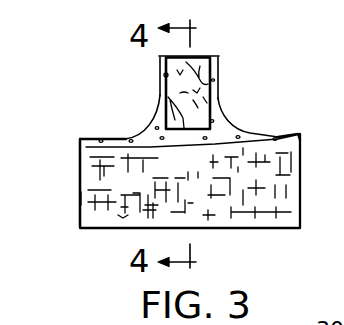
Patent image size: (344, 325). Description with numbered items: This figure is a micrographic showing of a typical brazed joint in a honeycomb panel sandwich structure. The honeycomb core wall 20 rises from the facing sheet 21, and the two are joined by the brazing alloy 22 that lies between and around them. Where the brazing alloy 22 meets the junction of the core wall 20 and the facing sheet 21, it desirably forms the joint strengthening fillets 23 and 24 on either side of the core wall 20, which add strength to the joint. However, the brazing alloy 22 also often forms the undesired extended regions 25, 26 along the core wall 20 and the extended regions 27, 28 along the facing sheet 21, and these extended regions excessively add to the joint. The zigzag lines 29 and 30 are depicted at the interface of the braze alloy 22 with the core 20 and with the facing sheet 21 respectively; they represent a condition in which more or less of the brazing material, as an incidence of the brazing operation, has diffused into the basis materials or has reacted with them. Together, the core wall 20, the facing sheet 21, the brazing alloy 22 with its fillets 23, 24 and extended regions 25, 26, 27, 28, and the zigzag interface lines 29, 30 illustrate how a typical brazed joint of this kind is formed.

The honeycomb core wall 20 is at (219, 81).
The facing sheet 21 is at (300, 231).
The brazing alloy 22 is at (213, 146).
The joint strengthening fillet 23 is at (238, 112).
The joint strengthening fillet 24 is at (142, 128).
The extended region 25 is at (161, 71).
The extended region 26 is at (217, 57).
The extended region 27 is at (82, 137).
The extended region 28 is at (288, 133).
The zigzag line 29 is at (166, 89).
The zigzag line 30 is at (82, 164).